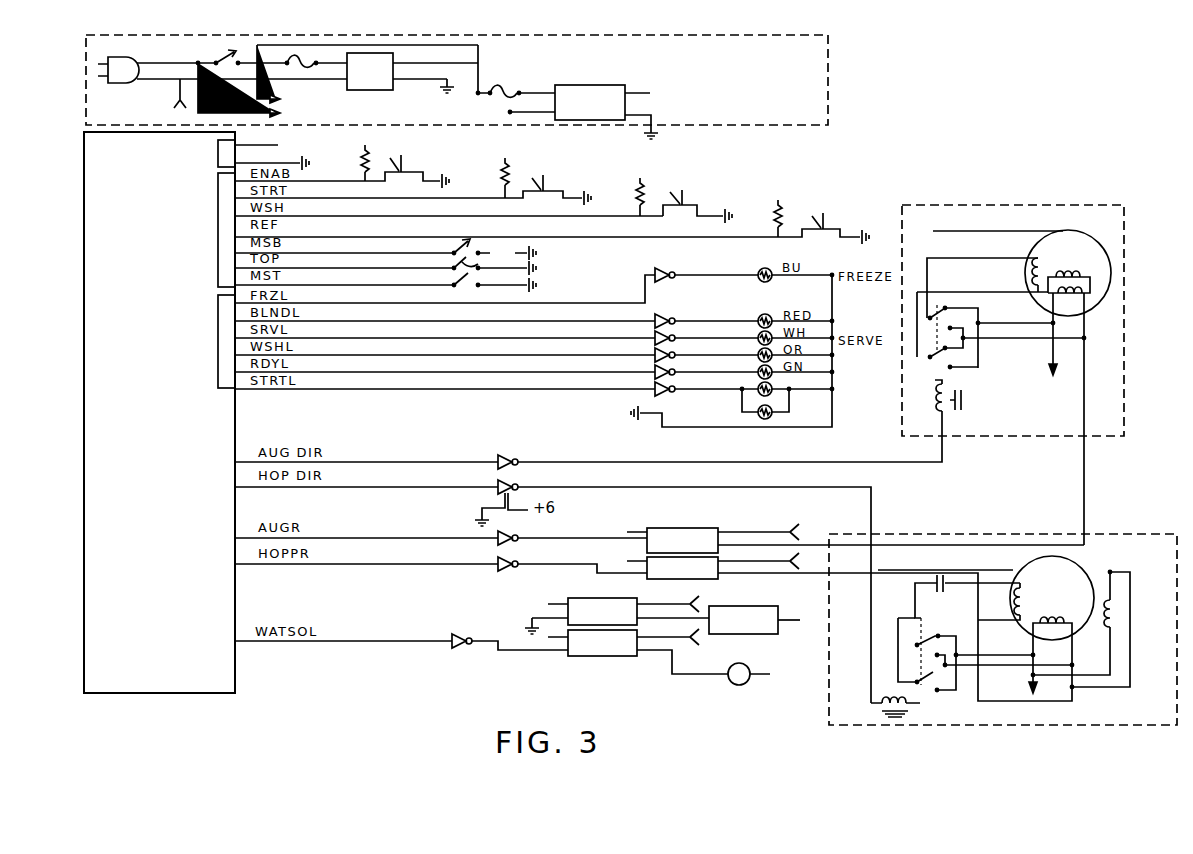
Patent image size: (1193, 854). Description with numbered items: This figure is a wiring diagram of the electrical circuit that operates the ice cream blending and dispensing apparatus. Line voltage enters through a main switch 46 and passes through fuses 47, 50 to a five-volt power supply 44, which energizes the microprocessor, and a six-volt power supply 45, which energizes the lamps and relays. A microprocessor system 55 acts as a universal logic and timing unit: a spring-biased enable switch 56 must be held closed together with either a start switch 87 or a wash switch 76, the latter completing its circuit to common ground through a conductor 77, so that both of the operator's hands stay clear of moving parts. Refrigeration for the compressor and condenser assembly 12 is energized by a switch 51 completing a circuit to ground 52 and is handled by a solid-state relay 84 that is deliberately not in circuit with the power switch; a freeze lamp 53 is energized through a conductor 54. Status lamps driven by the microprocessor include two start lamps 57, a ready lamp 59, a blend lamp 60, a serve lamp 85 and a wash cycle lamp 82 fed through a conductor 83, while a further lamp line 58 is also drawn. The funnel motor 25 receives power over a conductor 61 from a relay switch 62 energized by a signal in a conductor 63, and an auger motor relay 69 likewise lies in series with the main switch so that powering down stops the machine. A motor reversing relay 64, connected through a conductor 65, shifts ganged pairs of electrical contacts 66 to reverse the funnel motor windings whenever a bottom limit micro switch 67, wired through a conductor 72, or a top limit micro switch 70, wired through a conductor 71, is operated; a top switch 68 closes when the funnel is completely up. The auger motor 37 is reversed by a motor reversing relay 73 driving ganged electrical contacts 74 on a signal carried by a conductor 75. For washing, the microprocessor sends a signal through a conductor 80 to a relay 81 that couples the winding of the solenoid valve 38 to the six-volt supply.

The refrigerator compressor and condenser assembly 12 is at (760, 608).
The funnel motor 25 is at (1144, 552).
The auger motor 37 is at (1082, 216).
The solenoid valve 38 is at (747, 666).
The five-volt power supply 44 is at (375, 52).
The six-volt power supply 45 is at (603, 88).
The main switch 46 is at (222, 50).
The fuse 47 is at (305, 61).
The fuse 50 is at (518, 90).
The switch 51 is at (547, 210).
The ground 52 is at (869, 226).
The freeze lamp 53 is at (760, 268).
The conductor 54 is at (710, 274).
The microprocessor system 55 is at (159, 423).
The enable switch 56 is at (342, 161).
The start lamps 57 is at (758, 385).
The ready lamp driver line 58 is at (632, 372).
The ready lamp 59 is at (758, 368).
The blend lamp 60 is at (760, 315).
The conductor 61 is at (870, 578).
The relay switch 62 is at (706, 574).
The conductor 63 is at (432, 566).
The motor reversing relay 64 is at (903, 699).
The conductor 65 is at (873, 518).
The ganged pairs of electrical contacts 66 is at (920, 640).
The bottom limit micro switch 67 is at (462, 241).
The top switch 68 is at (385, 268).
The auger motor relay 69 is at (710, 537).
The top limit micro switch 70 is at (470, 277).
The conductor 71 is at (362, 285).
The conductor 72 is at (408, 253).
The motor reversing relay 73 is at (964, 400).
The ganged electrical contacts 74 is at (945, 299).
The conductor 75 is at (680, 464).
The wash switch 76 is at (684, 192).
The conductor 77 is at (607, 215).
The conductor 80 is at (385, 643).
The relay 81 is at (612, 654).
The wash cycle lamp 82 is at (758, 351).
The conductor 83 is at (632, 355).
The solid-state relay 84 is at (596, 604).
The serve lamp 85 is at (758, 334).
The start switch 87 is at (413, 176).